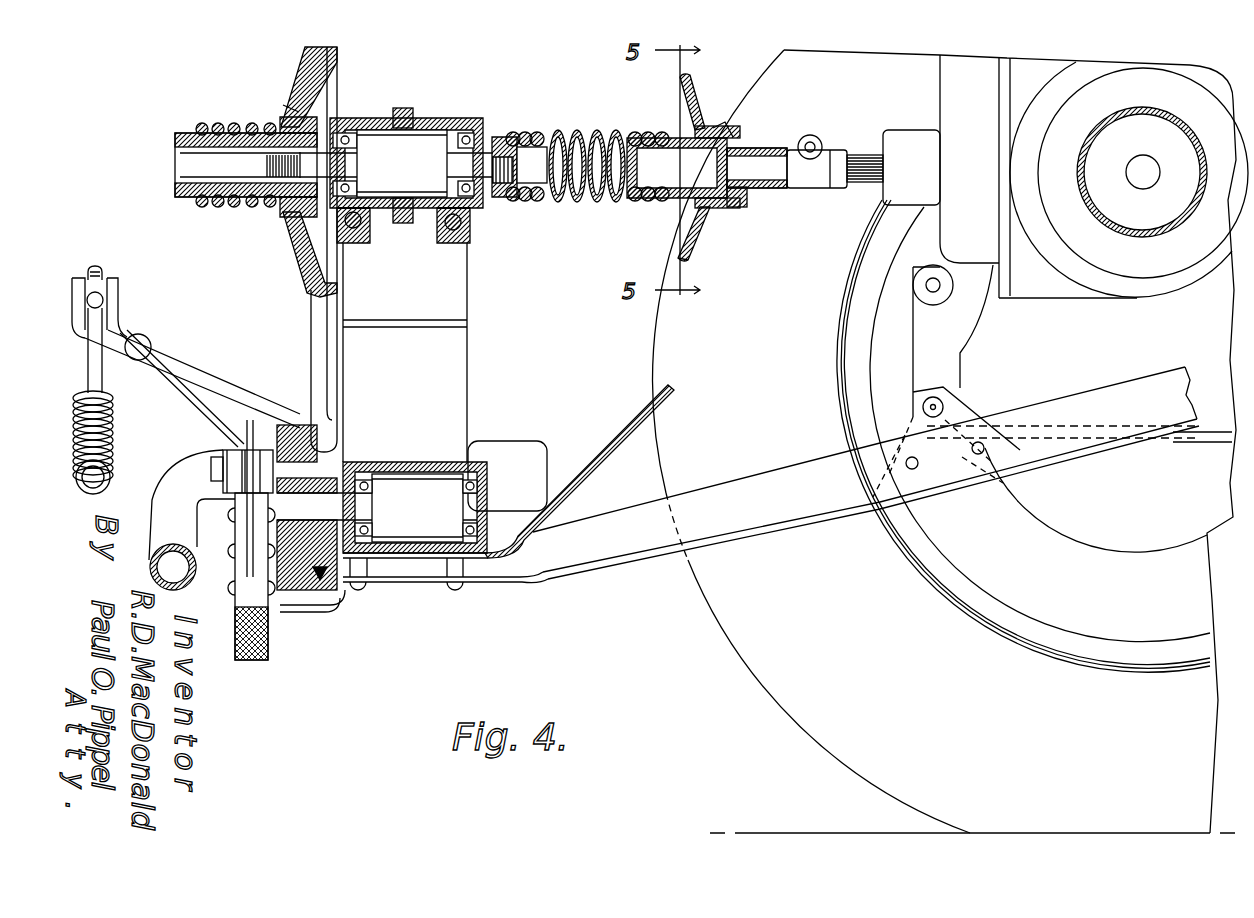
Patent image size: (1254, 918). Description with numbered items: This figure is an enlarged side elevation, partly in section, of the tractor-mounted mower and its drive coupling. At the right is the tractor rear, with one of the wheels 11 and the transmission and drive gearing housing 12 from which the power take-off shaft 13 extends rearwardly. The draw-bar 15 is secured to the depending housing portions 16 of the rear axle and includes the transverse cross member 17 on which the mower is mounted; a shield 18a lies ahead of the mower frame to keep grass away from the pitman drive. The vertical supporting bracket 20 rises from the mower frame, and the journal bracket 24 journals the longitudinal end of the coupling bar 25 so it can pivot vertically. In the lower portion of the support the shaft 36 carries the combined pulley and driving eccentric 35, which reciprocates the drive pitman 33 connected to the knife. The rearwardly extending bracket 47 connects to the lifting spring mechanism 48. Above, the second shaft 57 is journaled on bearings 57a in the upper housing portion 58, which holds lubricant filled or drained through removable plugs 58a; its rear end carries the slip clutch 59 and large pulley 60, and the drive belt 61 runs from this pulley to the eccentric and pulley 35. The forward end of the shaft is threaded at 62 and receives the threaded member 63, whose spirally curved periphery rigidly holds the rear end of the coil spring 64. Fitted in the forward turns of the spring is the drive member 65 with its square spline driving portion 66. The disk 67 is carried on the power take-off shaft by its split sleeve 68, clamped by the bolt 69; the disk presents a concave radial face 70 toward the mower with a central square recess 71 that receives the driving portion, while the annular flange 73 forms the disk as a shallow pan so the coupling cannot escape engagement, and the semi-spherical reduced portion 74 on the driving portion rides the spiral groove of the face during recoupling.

The wheels 11 is at (803, 702).
The transmission and drive gearing housing 12 is at (1053, 290).
The power take-off shaft 13 is at (862, 156).
The draw-bar 15 is at (587, 553).
The depending housing portions 16 is at (1157, 537).
The cross member 17 is at (427, 570).
The shield 18a is at (628, 433).
The supporting bracket 20 is at (450, 362).
The journal bracket 24 is at (503, 450).
The coupling bar 25 is at (173, 473).
The drive pitman 33 is at (268, 637).
The combined pulley and driving eccentric 35 is at (293, 418).
The shaft 36 is at (410, 517).
The bracket 47 is at (215, 360).
The lifting spring mechanism 48 is at (113, 421).
The second shaft 57 is at (422, 150).
The bearings 57a is at (405, 130).
The upper housing portion 58 is at (478, 128).
The removable plugs 58a is at (403, 110).
The slip clutch 59 is at (299, 112).
The large pulley 60 is at (297, 232).
The drive belt 61 is at (316, 317).
The threaded portion 62 is at (533, 160).
The threaded member 63 is at (537, 150).
The coil spring 64 is at (563, 200).
The drive member 65 is at (657, 177).
The spline driving portion 66 is at (722, 135).
The disk 67 is at (695, 233).
The sleeve 68 is at (778, 137).
The bolt 69 is at (815, 135).
The concave radial face 70 is at (690, 104).
The recess 71 is at (713, 128).
The annular flange 73 is at (680, 261).
The reduced portion 74 is at (747, 198).